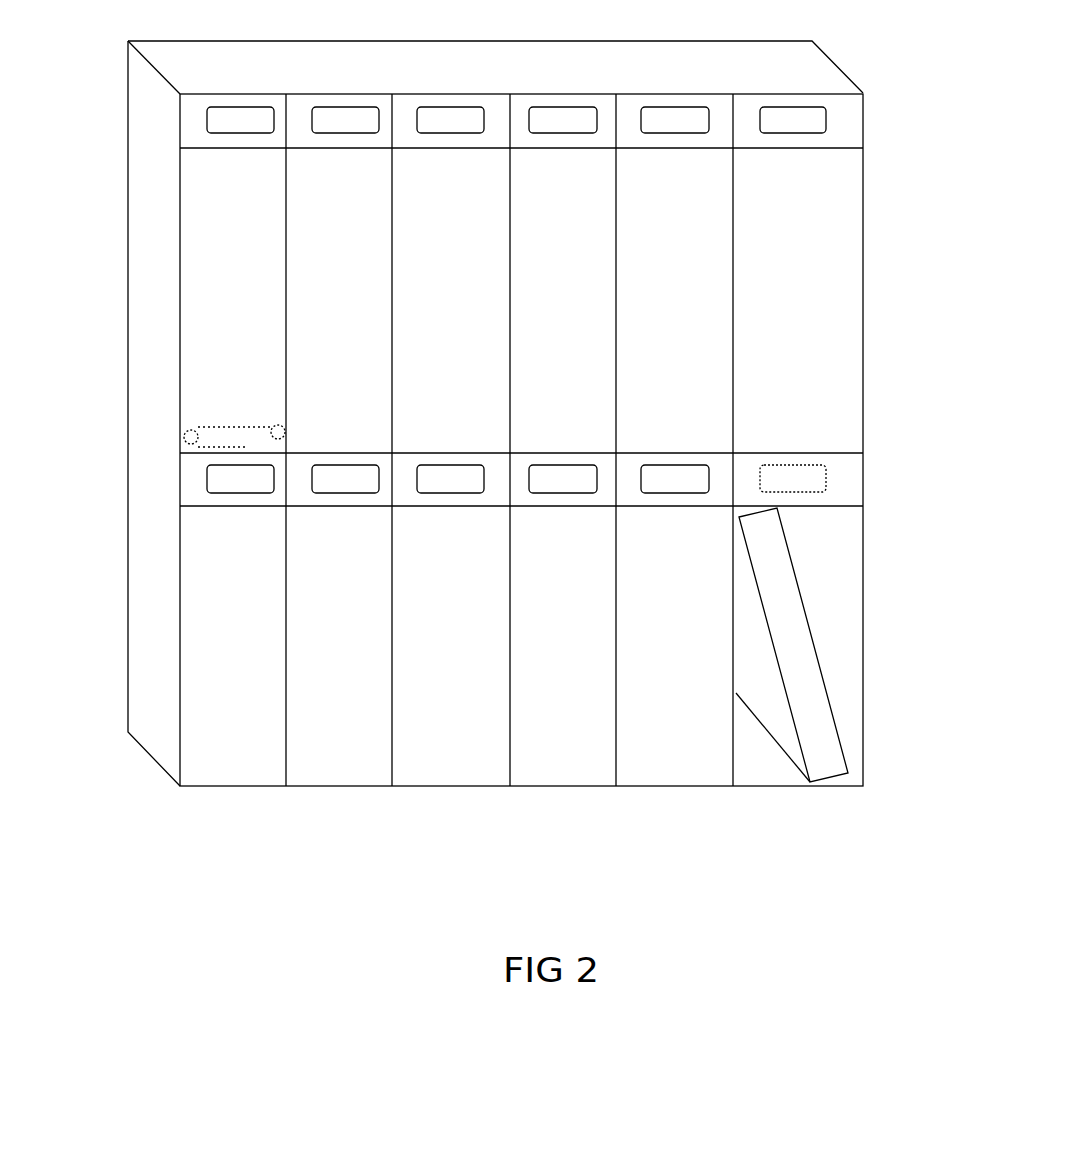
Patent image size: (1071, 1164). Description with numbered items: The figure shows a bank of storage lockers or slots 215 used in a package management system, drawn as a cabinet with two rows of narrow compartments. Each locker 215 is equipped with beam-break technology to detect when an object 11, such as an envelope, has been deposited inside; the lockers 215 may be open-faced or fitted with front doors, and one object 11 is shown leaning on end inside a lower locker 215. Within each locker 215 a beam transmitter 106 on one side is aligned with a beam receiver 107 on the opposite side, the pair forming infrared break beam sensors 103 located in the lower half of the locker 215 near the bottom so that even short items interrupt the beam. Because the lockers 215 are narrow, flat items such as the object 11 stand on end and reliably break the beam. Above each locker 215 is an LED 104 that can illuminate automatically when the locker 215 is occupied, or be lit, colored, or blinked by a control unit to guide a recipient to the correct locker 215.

The storage locker 215 is at (847, 287).
The LED 104 is at (826, 465).
The object 11 is at (830, 683).
The infrared break beam sensor 103 is at (157, 389).
The beam transmitter 106 is at (218, 440).
The beam receiver 107 is at (262, 405).